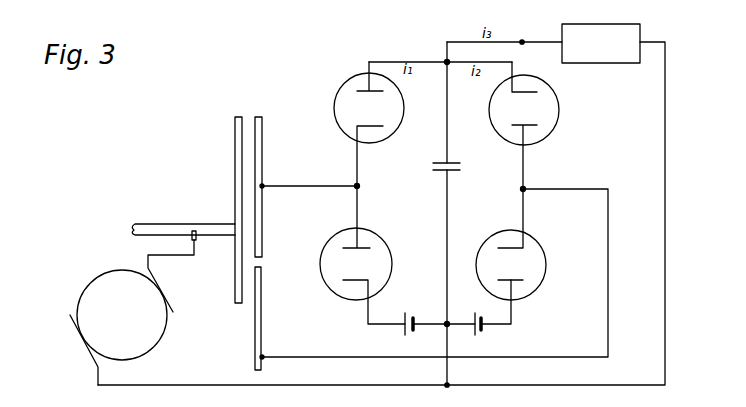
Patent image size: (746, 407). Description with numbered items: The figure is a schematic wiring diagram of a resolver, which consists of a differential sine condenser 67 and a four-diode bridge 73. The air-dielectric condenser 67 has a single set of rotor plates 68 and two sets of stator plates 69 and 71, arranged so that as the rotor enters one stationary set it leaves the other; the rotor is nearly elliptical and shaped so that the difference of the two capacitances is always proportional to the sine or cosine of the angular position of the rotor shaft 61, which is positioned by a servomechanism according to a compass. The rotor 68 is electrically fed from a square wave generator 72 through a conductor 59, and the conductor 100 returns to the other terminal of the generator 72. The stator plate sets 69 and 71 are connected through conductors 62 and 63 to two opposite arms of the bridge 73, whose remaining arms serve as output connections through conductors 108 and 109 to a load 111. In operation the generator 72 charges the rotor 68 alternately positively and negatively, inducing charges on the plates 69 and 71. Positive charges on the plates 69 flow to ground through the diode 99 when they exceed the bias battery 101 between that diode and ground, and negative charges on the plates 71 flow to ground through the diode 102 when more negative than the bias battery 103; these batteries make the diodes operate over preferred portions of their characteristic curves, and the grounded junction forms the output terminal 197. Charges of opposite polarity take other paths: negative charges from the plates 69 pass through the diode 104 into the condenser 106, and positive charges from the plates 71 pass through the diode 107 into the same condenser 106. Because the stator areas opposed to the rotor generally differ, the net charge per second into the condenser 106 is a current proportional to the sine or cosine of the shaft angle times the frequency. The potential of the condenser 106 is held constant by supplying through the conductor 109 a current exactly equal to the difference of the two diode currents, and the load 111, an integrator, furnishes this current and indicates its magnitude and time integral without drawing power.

The conductor 59 is at (168, 262).
The rotor shaft 61 is at (170, 222).
The conductor 62 is at (317, 186).
The conductor 63 is at (320, 352).
The differential sine condenser 67 is at (253, 101).
The rotor plates 68 is at (235, 155).
The stator plates 69 is at (262, 162).
The stator plates 71 is at (261, 334).
The generator 72 is at (152, 347).
The four-diode bridge 73 is at (402, 182).
The diode 99 is at (332, 240).
The conductor 100 is at (665, 172).
The bias battery 101 is at (403, 332).
The diode 102 is at (547, 262).
The bias battery 103 is at (478, 334).
The diode 104 is at (340, 88).
The condenser 106 is at (458, 167).
The diode 107 is at (559, 118).
The conductor 108 is at (447, 62).
The conductor 109 is at (524, 43).
The load 111 is at (600, 63).
The output terminal 197 is at (447, 324).